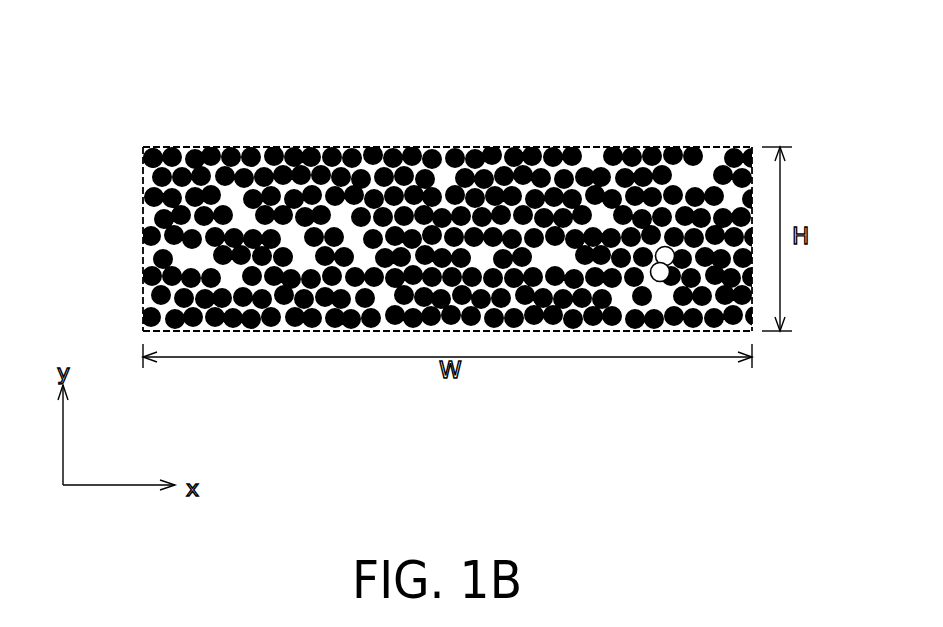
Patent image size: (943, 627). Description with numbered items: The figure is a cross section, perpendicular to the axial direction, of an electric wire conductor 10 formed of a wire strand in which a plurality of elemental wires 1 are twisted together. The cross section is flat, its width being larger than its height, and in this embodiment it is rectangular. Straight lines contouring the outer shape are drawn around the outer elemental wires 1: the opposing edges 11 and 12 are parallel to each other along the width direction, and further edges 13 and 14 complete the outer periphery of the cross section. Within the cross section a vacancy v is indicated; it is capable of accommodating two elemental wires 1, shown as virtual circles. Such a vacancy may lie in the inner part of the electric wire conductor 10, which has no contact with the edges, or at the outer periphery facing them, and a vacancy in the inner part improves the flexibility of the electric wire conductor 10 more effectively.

The elemental wire 1 is at (146, 160).
The electric wire conductor 10 is at (822, 177).
The edge 11 is at (502, 146).
The edge 12 is at (494, 336).
The edge 13 is at (143, 233).
The edge 14 is at (752, 218).
The vacancy v is at (673, 283).